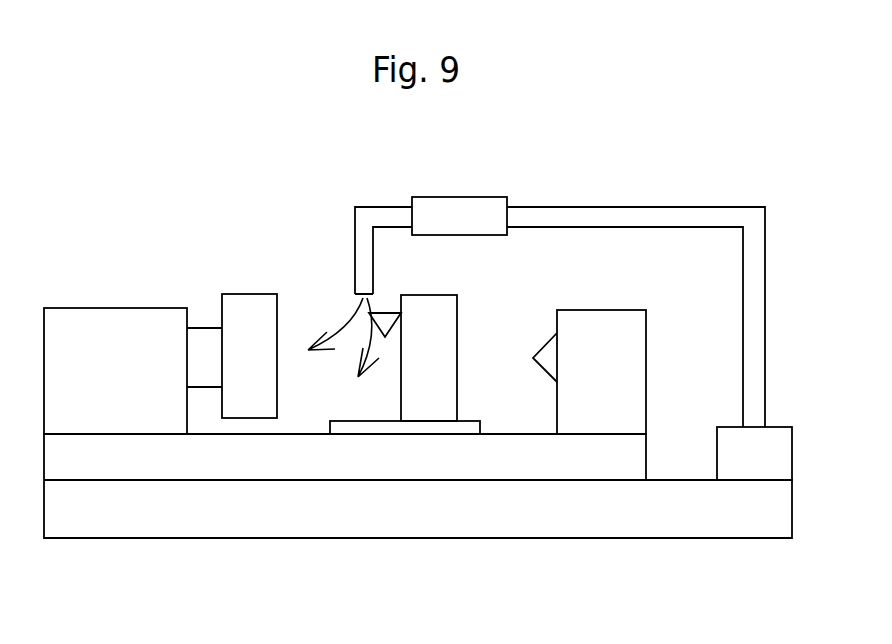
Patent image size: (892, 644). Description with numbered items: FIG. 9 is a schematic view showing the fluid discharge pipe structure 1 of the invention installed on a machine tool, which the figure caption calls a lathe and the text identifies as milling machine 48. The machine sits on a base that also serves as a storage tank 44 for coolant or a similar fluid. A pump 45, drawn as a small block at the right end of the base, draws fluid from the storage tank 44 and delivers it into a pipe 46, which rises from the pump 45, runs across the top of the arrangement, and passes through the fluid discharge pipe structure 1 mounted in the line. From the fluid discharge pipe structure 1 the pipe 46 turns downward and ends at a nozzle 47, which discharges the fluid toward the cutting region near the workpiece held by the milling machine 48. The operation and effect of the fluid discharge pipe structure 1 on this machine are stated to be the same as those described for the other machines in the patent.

The fluid discharge pipe structure 1 is at (460, 215).
The storage tank 44 is at (452, 532).
The pump 45 is at (783, 452).
The pipe 46 is at (752, 327).
The nozzle 47 is at (365, 262).
The milling machine 48 is at (224, 255).